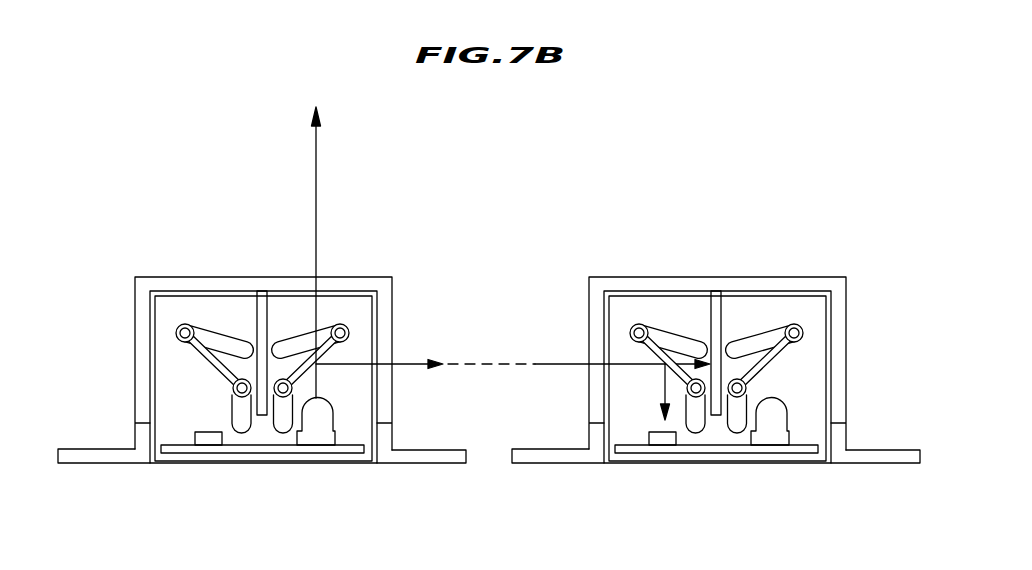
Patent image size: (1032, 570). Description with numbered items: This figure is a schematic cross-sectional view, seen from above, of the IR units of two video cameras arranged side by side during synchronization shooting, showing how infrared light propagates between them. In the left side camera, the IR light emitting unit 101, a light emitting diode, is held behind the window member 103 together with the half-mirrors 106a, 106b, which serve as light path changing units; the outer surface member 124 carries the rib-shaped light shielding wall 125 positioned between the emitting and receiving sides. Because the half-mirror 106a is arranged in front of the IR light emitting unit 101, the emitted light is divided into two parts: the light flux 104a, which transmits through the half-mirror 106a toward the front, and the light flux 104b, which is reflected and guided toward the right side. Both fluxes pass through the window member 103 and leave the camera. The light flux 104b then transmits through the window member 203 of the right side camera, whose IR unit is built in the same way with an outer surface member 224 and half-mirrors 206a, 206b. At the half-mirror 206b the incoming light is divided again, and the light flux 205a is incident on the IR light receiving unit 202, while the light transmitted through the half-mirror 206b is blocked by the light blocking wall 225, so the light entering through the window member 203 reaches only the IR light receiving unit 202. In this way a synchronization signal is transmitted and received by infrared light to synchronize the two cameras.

The IR light emitting unit 101 is at (317, 436).
The window member 103 is at (135, 322).
The light flux 104a is at (317, 168).
The light flux 104b is at (410, 362).
The half-mirror 106a is at (334, 325).
The half-mirror 106b is at (208, 326).
The outer surface member 124 is at (90, 449).
The light shielding wall 125 is at (261, 292).
The IR light receiving unit 202 is at (666, 439).
The window member 203 is at (800, 277).
The light flux 205a is at (665, 387).
The half-mirror 206a is at (780, 364).
The half-mirror 206b is at (665, 326).
The outer surface member 224 is at (882, 449).
The light blocking wall 225 is at (718, 292).